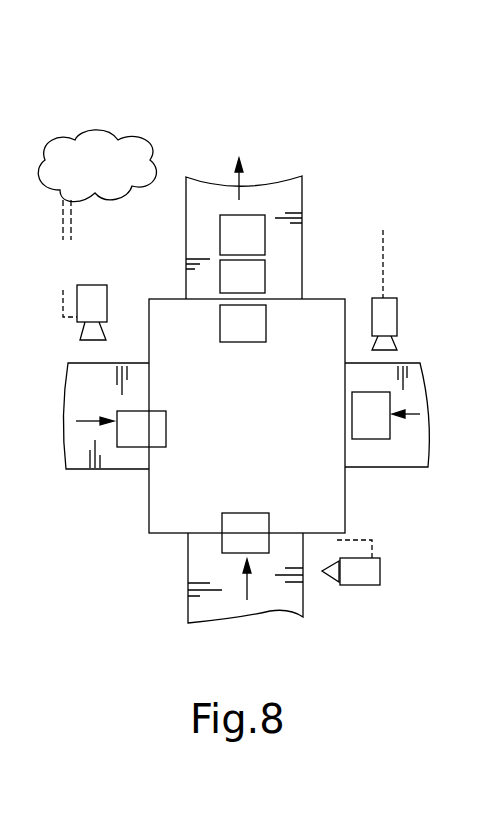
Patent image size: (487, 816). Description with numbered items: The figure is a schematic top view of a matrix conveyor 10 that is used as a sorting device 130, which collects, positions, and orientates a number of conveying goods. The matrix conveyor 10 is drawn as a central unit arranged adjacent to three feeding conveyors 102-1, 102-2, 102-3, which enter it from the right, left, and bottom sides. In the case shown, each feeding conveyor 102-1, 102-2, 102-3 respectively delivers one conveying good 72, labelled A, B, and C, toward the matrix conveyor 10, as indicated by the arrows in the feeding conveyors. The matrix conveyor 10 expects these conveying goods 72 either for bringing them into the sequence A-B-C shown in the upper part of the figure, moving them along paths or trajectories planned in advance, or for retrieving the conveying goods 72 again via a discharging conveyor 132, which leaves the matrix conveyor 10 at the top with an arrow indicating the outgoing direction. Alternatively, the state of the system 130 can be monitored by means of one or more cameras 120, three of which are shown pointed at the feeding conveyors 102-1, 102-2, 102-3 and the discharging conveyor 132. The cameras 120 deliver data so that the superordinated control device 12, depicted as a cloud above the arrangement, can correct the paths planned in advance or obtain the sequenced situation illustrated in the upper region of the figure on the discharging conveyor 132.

The sorting device 130 is at (347, 184).
The discharging conveyor 132 is at (278, 176).
The matrix conveyor 10 is at (322, 298).
The superordinated control device 12 is at (116, 180).
The conveying good 72 is at (157, 447).
The camera 120 is at (92, 292).
The first feeding conveyor 102-1 is at (380, 470).
The second feeding conveyor 102-2 is at (112, 470).
The third feeding conveyor 102-3 is at (262, 612).